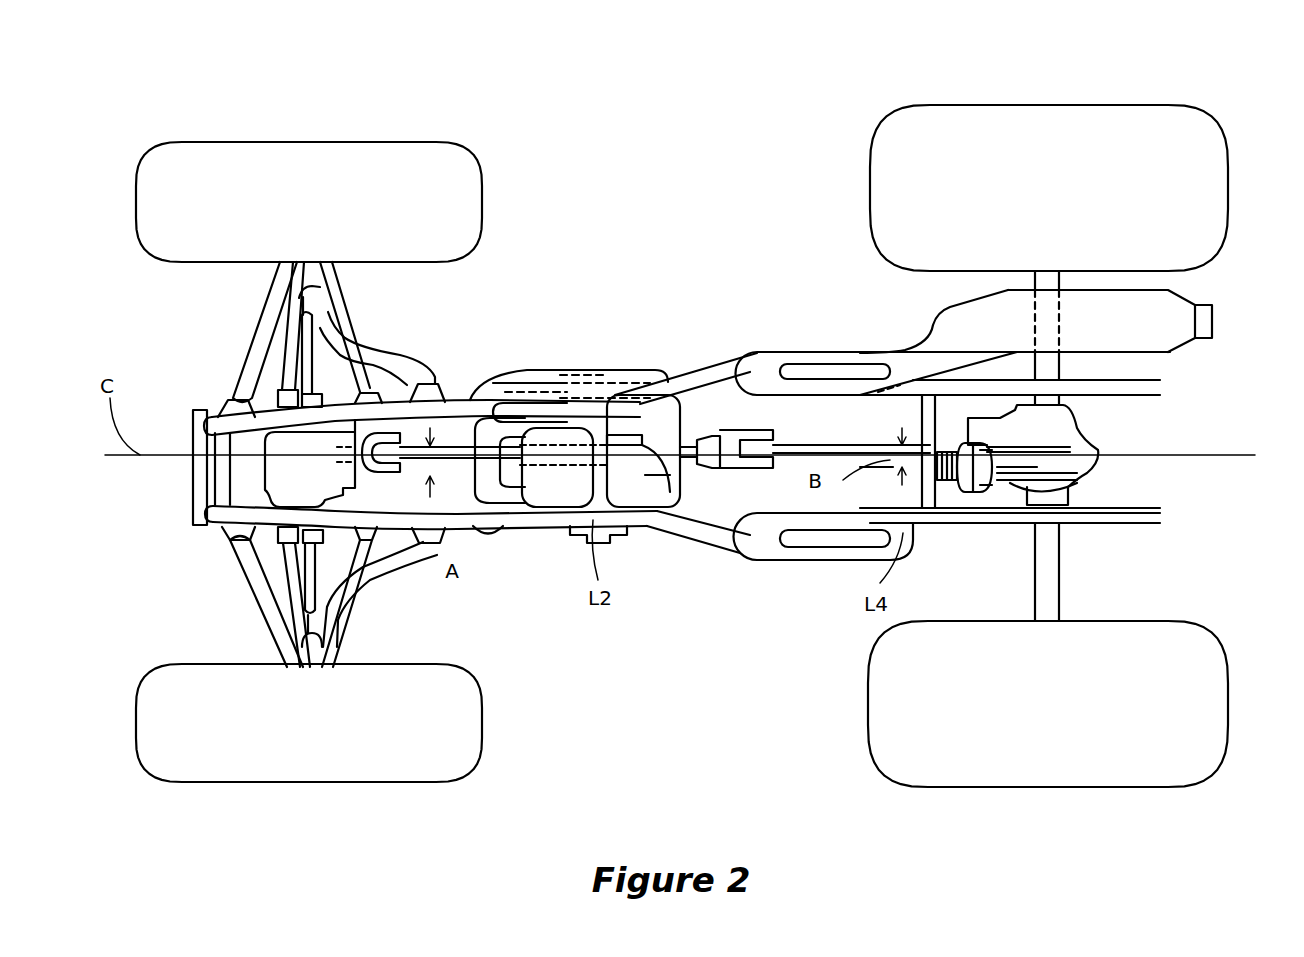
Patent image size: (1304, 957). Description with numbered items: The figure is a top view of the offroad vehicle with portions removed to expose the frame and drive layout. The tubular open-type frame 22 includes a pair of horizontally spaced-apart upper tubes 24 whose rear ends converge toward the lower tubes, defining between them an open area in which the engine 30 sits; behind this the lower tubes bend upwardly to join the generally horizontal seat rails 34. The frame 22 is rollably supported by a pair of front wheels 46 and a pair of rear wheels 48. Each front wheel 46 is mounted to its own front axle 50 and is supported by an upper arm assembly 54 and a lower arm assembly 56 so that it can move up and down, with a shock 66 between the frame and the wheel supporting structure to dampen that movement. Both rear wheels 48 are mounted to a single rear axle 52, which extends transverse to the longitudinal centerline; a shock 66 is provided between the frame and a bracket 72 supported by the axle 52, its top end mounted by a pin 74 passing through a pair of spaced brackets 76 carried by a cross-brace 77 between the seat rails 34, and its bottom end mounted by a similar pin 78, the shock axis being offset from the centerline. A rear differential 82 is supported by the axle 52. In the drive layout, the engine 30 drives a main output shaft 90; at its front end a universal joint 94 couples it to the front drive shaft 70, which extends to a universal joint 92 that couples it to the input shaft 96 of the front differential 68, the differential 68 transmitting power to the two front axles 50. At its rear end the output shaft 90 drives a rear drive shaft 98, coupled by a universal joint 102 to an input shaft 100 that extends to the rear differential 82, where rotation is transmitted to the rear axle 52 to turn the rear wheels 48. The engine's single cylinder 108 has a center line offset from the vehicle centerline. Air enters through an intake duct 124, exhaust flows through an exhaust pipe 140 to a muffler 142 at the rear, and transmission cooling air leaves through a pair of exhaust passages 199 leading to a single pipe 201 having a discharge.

The frame 22 is at (678, 559).
The upper tubes 24 is at (713, 403).
The engine 30 is at (667, 387).
The seat rails 34 is at (820, 390).
The front wheels 46 is at (315, 165).
The rear wheels 48 is at (1082, 124).
The front axle 50 is at (308, 362).
The rear axle 52 is at (1052, 575).
The upper arm assembly 54 is at (295, 312).
The lower arm assembly 56 is at (245, 375).
The shock 66 is at (987, 492).
The front differential 68 is at (275, 470).
The front drive shaft 70 is at (450, 447).
The bracket 72 is at (1013, 478).
The pin 74 is at (953, 493).
The brackets 76 is at (940, 510).
The cross-brace 77 is at (927, 377).
The pin 78 is at (998, 448).
The rear differential 82 is at (1063, 420).
The main output shaft 90 is at (627, 417).
The universal joint 92 is at (382, 490).
The universal joint 94 is at (548, 510).
The input shaft 96 is at (390, 395).
The rear drive shaft 98 is at (702, 465).
The input shaft 100 is at (857, 417).
The universal joint 102 is at (760, 550).
The cylinder 108 is at (493, 515).
The intake duct 124 is at (653, 505).
The exhaust pipe 140 is at (557, 380).
The muffler 142 is at (1160, 315).
The exhaust passages 199 is at (582, 387).
The pipe 201 is at (493, 417).